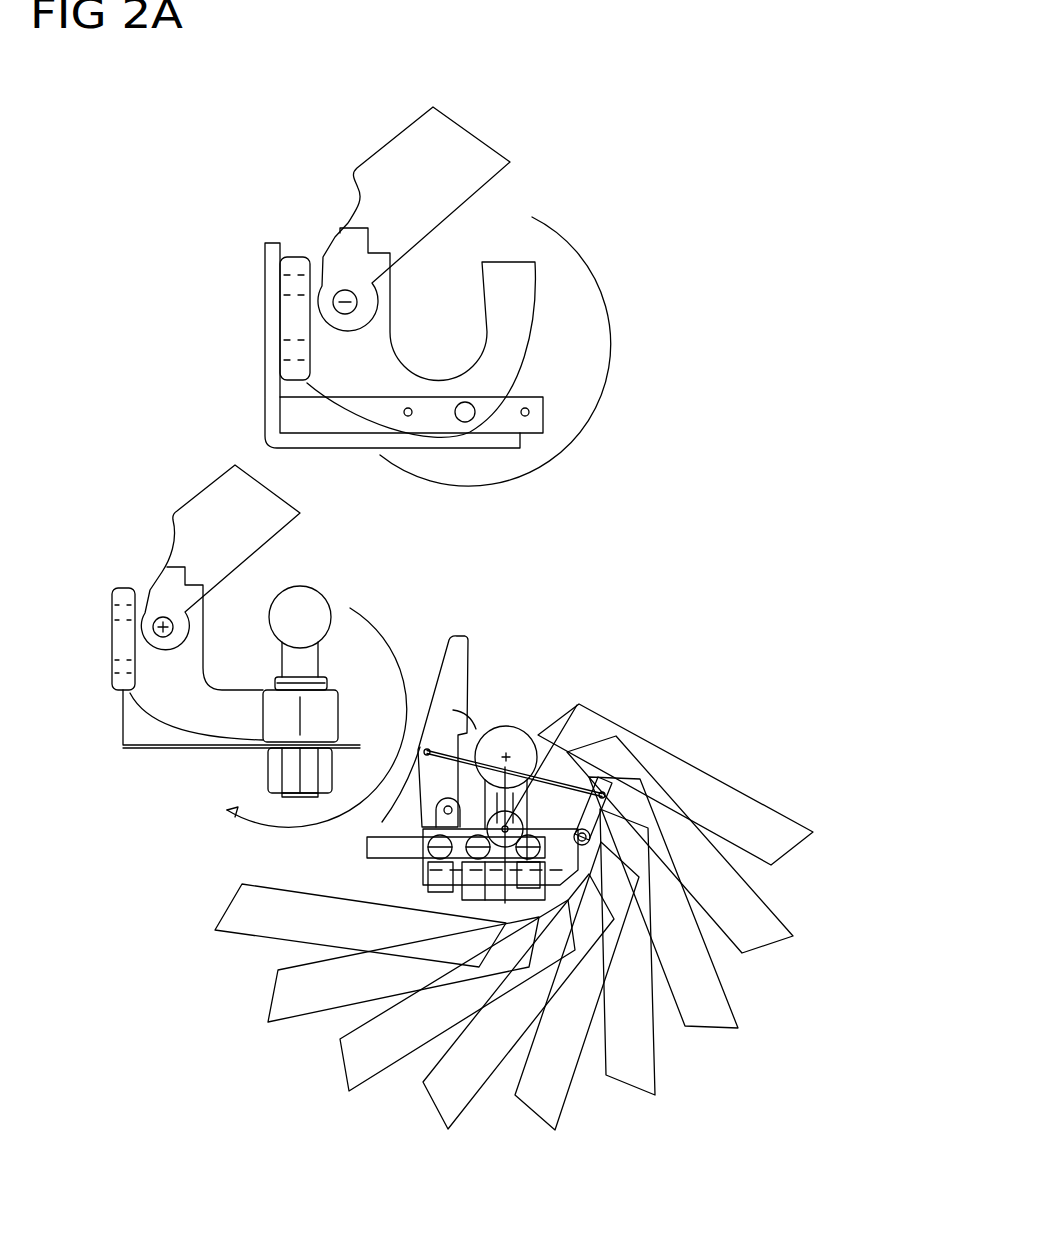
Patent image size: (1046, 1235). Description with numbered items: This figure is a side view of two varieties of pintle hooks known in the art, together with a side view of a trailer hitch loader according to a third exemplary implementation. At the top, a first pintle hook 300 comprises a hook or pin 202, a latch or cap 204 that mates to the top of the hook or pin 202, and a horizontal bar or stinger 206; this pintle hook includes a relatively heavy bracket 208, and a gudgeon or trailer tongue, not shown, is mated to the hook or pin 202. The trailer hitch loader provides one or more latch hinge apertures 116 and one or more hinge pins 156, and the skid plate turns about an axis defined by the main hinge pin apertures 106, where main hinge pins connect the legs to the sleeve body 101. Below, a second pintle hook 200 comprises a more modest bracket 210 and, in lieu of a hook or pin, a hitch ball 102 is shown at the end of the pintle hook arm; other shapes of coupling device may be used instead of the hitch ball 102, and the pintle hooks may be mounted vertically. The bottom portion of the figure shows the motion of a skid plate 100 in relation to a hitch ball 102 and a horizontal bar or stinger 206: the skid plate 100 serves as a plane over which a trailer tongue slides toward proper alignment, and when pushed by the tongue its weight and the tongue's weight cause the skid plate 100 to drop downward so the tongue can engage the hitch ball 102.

The skid plate 100 is at (253, 880).
The sleeve body 101 is at (263, 318).
The hitch ball 102 is at (312, 607).
The main hinge pin apertures 106 is at (470, 418).
The latch hinge apertures 116 is at (528, 410).
The hinge pins 156 is at (411, 415).
The second pintle hook 200 is at (428, 593).
The hook or pin 202 is at (513, 312).
The latch or cap 204 is at (447, 162).
The horizontal bar or stinger 206 is at (367, 840).
The bracket 208 is at (262, 345).
The bracket 210 is at (170, 746).
The first pintle hook 300 is at (612, 202).